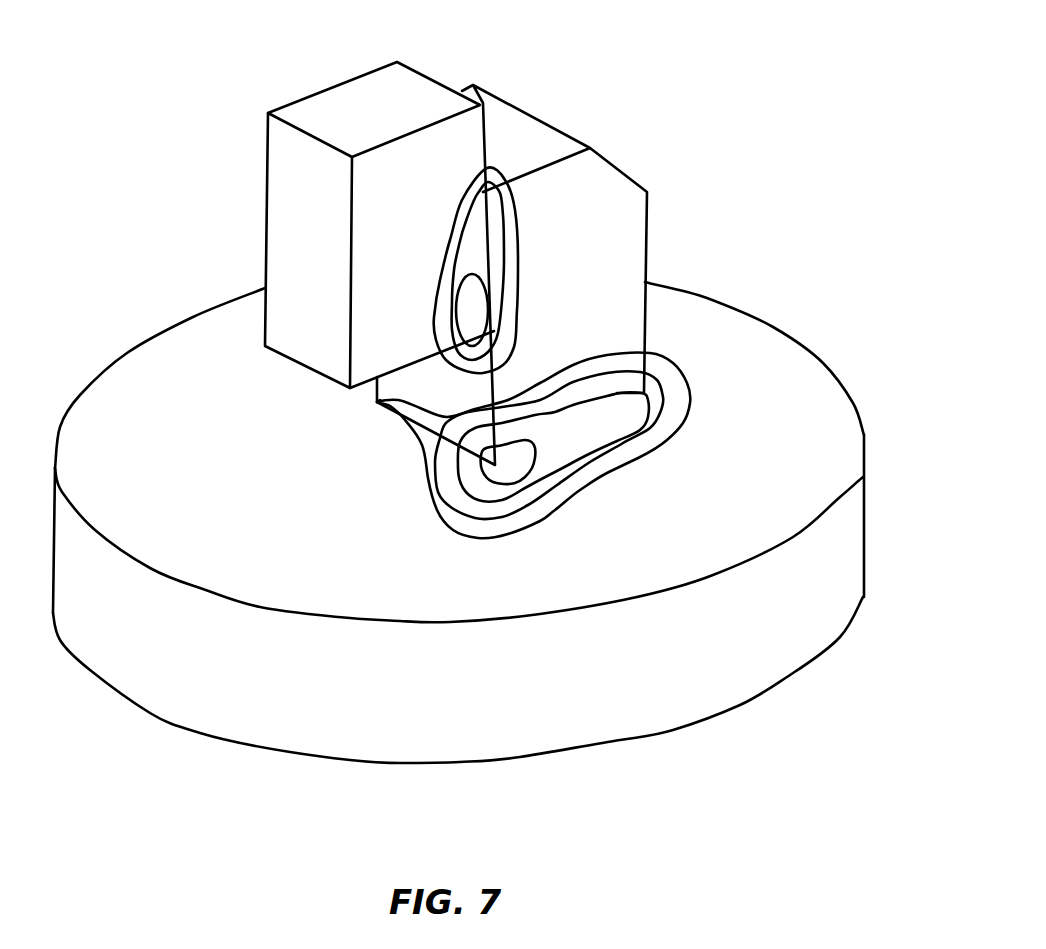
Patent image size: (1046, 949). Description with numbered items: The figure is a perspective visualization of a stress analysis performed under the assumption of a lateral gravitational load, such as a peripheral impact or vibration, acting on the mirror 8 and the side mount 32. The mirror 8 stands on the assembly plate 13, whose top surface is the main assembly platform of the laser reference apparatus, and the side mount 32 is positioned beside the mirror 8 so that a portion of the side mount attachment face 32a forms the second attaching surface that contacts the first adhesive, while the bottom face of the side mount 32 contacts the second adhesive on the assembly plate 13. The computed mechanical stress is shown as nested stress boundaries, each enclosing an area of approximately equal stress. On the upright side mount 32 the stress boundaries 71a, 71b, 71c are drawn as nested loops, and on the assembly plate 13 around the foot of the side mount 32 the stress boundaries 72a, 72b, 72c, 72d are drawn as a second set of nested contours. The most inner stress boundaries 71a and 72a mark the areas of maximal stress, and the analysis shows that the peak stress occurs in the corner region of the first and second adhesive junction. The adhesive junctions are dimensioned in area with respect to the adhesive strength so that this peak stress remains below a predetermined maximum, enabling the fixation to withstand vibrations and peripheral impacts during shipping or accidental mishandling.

The mirror 8 is at (267, 160).
The assembly plate 13 is at (857, 502).
The side mount 32 is at (646, 243).
The side mount attachment face 32a is at (425, 380).
The inner stress boundary 71a is at (506, 288).
The stress boundary 71b is at (503, 212).
The outer stress boundary 71c is at (497, 178).
The inner stress boundary 72a is at (492, 478).
The stress boundary 72b is at (553, 460).
The stress boundary 72c is at (623, 450).
The outer stress boundary 72d is at (665, 450).